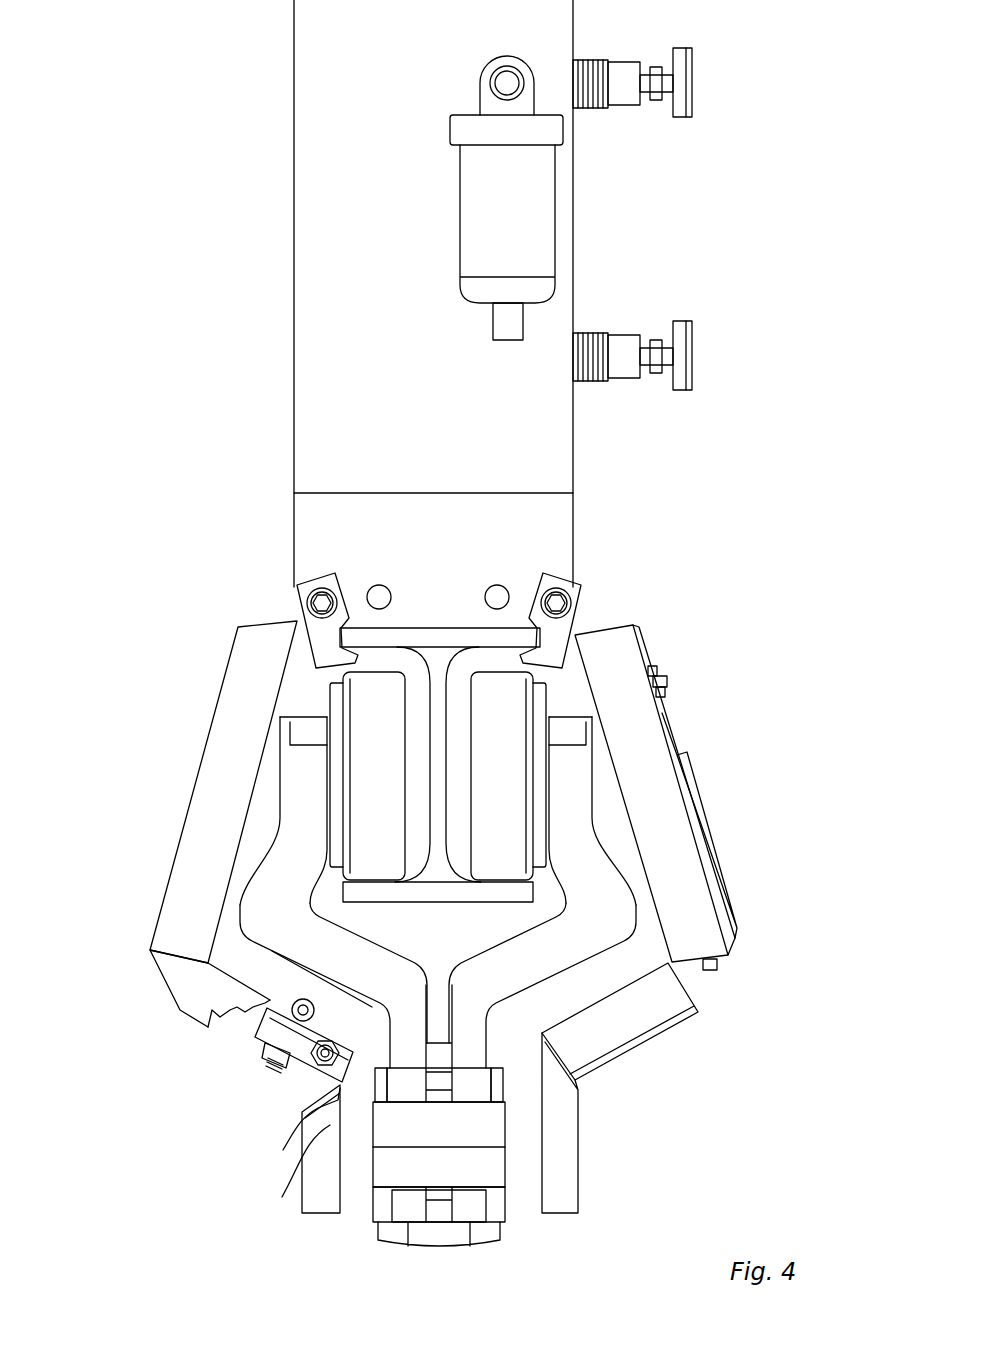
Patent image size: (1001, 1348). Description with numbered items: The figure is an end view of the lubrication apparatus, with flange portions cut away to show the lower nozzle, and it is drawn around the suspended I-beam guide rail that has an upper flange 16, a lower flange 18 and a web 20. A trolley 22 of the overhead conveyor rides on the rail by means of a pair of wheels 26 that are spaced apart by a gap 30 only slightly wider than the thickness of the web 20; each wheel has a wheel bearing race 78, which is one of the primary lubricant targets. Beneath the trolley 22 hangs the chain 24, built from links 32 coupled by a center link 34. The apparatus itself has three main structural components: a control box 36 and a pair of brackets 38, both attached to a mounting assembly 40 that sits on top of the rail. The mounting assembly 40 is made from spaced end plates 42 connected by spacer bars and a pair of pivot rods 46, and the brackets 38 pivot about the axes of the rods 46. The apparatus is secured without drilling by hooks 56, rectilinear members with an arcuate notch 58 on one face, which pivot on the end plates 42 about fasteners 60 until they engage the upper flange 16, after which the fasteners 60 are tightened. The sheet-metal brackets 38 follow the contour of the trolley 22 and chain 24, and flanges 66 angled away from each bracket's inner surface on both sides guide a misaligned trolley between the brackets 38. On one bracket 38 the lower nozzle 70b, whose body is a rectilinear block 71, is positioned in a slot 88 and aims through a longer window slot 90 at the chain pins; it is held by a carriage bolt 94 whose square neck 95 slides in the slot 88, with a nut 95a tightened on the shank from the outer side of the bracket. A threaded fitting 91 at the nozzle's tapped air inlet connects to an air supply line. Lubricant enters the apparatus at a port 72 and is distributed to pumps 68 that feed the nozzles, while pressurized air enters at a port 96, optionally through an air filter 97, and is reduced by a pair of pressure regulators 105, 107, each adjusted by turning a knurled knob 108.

The upper flange 16 is at (480, 637).
The lower flange 18 is at (415, 892).
The web 20 is at (437, 733).
The trolley 22 is at (615, 835).
The chain 24 is at (523, 1197).
The wheels 26 is at (507, 713).
The gap 30 is at (458, 790).
The links 32 is at (383, 1070).
The center link 34 is at (387, 1168).
The control box 36 is at (550, 468).
The brackets 38 is at (675, 715).
The mounting assembly 40 is at (285, 525).
The end plates 42 is at (528, 547).
The pivot rods 46 is at (498, 585).
The hooks 56 is at (578, 638).
The arcuate notch 58 is at (358, 638).
The fasteners 60 is at (557, 602).
The flanges 66 is at (675, 855).
The pumps 68 is at (713, 903).
The second nozzle 70b is at (245, 1023).
The rectilinear block 71 is at (267, 1035).
The port 72 is at (392, 1230).
The wheel bearing race 78 is at (485, 980).
The slot 88 is at (330, 1025).
The window slot 90 is at (300, 1118).
The threaded fitting 91 is at (308, 1067).
The carriage bolt 94 is at (293, 1007).
The square neck 95 is at (325, 997).
The nut 95a is at (288, 1067).
The port 96 is at (487, 97).
The air filter 97 is at (500, 243).
The pressure regulator 105 is at (622, 367).
The pressure regulator 107 is at (622, 95).
The knurled knob 108 is at (683, 100).